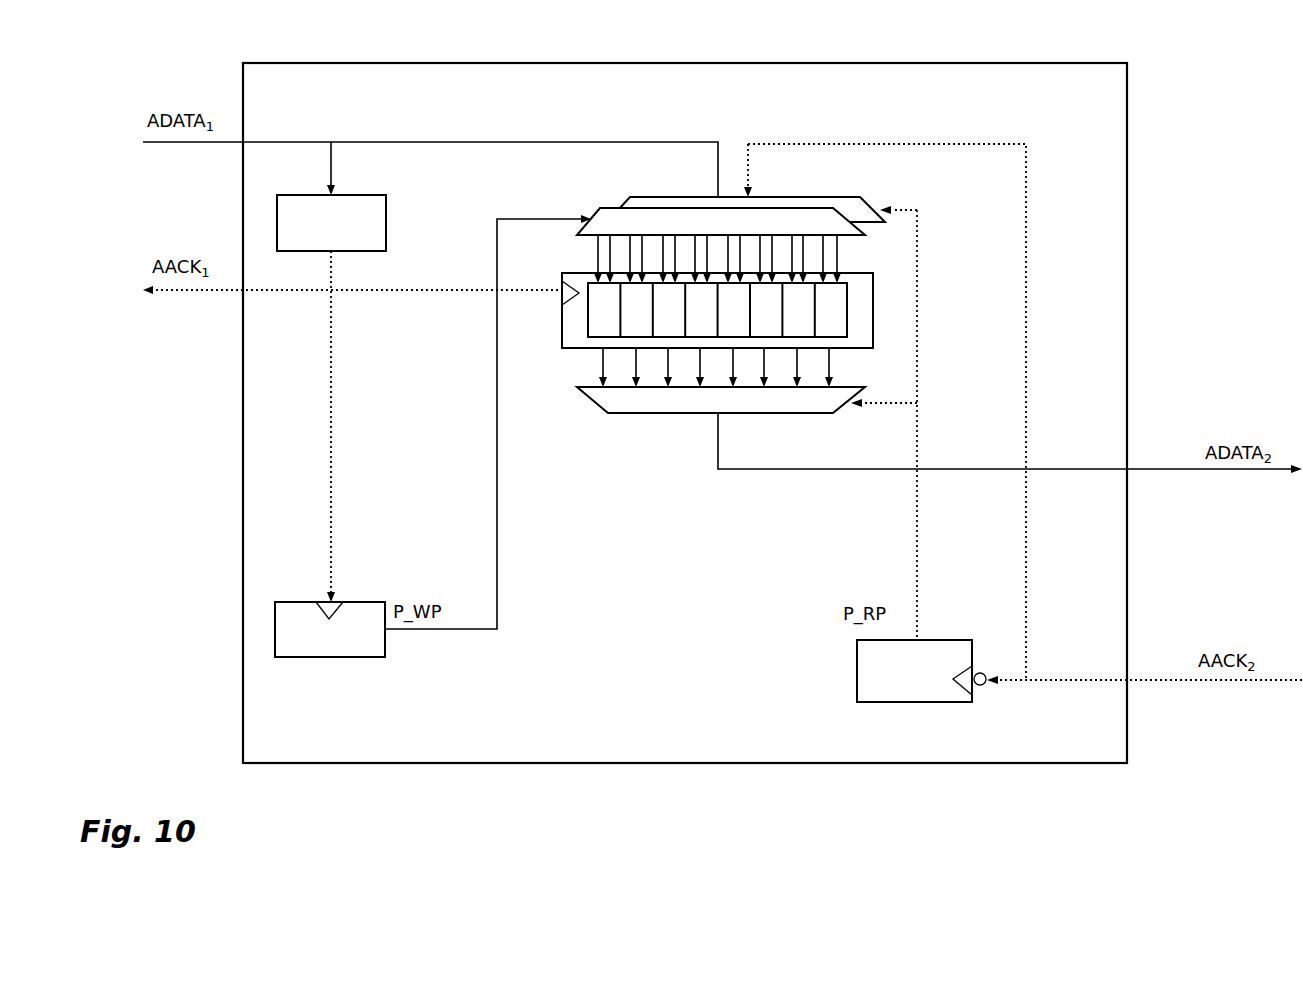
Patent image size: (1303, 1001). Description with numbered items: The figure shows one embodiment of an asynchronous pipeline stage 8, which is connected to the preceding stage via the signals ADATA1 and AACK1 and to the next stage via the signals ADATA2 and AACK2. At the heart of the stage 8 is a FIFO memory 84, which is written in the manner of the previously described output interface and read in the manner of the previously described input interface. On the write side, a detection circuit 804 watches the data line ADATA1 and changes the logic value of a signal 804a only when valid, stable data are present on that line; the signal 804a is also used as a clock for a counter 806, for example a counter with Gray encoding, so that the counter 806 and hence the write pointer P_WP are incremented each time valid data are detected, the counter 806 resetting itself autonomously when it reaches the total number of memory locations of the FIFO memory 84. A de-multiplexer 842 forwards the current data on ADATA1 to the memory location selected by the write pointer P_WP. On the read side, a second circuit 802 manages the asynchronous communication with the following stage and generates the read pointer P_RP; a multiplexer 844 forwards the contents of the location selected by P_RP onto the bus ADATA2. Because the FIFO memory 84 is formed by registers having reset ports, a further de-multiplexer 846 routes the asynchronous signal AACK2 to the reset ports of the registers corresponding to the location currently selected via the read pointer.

The asynchronous pipeline stage 8 is at (848, 62).
The FIFO memory 84 is at (875, 312).
The de-multiplexer 842 is at (594, 209).
The multiplexer 844 is at (622, 416).
The further de-multiplexer 846 is at (860, 197).
The second circuit 802 is at (888, 702).
The detection circuit 804 is at (360, 207).
The signal 804a is at (339, 356).
The counter 806 is at (303, 655).